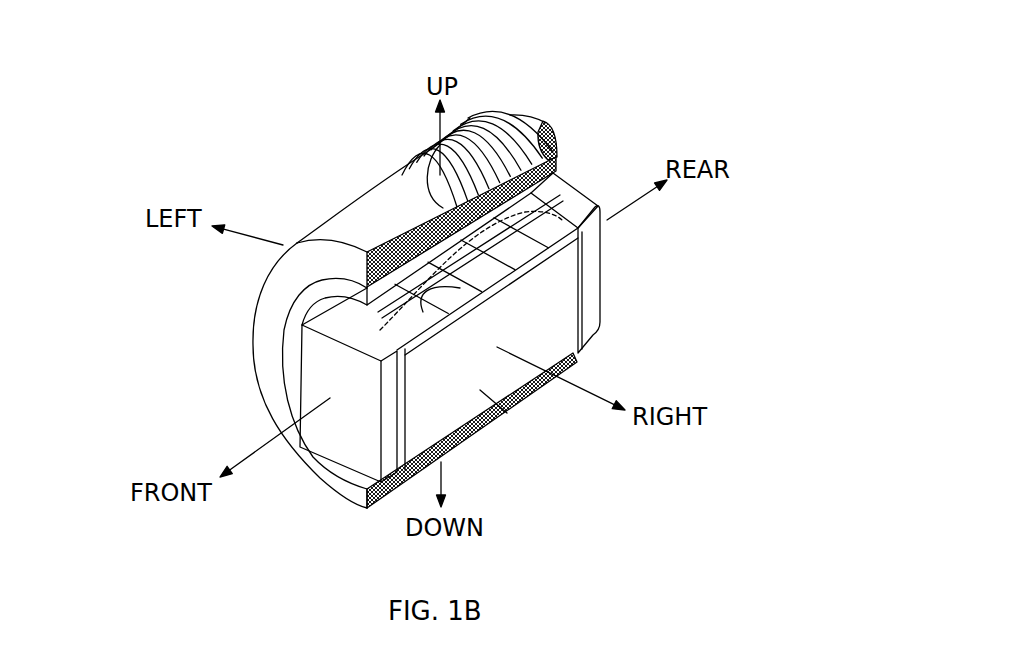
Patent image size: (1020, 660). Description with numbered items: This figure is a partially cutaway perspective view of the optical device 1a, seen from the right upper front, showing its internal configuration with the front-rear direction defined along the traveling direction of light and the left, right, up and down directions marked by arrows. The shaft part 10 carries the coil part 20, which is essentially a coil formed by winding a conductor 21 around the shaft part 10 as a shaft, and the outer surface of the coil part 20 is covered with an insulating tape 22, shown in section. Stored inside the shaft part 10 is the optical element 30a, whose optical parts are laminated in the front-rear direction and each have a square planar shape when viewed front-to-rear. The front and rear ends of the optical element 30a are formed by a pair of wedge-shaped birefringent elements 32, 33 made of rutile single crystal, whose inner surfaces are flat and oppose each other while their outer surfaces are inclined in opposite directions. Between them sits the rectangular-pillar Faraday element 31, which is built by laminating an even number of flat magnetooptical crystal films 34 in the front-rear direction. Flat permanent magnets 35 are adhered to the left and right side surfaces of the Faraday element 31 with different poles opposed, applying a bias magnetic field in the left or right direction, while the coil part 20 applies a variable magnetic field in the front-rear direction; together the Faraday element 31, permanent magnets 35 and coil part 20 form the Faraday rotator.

The optical device 1a is at (214, 183).
The shaft part 10 is at (558, 178).
The coil part 20 is at (262, 303).
The conductor 21 is at (555, 130).
The insulating tape 22 is at (413, 218).
The optical element 30a is at (510, 249).
The Faraday element 31 is at (508, 256).
The birefringent element 32 is at (327, 369).
The birefringent element 33 is at (590, 245).
The magnetooptical crystal film 34 is at (462, 289).
The permanent magnet 35 is at (507, 409).